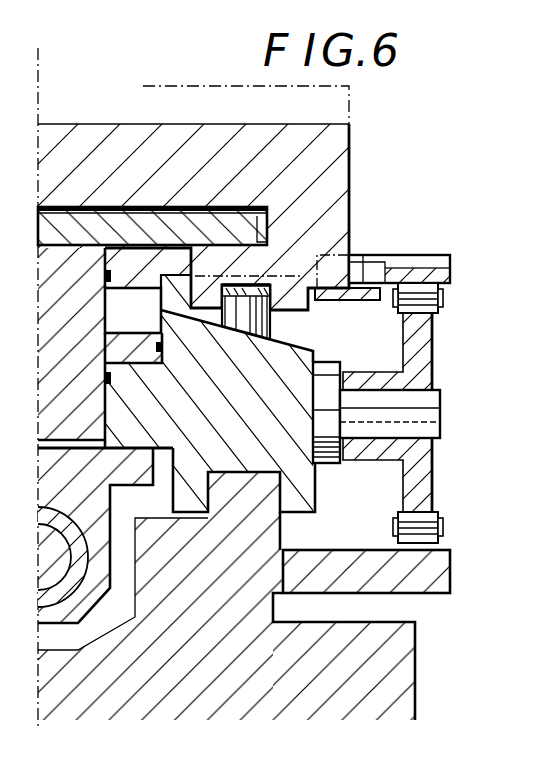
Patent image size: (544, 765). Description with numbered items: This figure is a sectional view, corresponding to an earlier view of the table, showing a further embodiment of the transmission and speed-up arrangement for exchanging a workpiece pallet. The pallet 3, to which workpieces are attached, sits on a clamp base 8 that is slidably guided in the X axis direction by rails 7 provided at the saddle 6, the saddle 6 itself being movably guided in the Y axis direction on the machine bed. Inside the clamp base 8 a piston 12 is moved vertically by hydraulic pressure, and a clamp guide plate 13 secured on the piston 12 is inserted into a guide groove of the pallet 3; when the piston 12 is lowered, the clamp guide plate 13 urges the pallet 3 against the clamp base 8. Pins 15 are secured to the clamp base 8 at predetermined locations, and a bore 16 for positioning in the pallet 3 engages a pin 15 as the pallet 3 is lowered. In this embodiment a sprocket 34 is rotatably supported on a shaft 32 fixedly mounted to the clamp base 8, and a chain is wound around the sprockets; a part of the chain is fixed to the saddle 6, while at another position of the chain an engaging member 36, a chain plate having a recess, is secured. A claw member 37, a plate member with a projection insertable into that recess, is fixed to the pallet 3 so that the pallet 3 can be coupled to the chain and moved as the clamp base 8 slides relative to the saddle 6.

The pallet 3 is at (218, 138).
The clamp guide plate 13 is at (100, 230).
The piston 12 is at (138, 350).
The pin 15 is at (230, 318).
The clamp base 8 is at (290, 367).
The bore for positioning 16 is at (262, 283).
The claw member 37 is at (370, 300).
The engaging member 36 is at (428, 255).
The sprocket 34 is at (433, 348).
The shaft 32 is at (428, 428).
The rail 7 is at (267, 495).
The saddle 6 is at (450, 577).